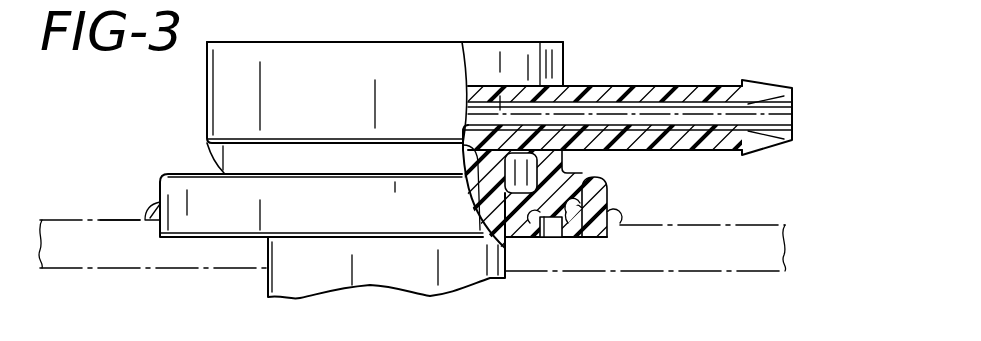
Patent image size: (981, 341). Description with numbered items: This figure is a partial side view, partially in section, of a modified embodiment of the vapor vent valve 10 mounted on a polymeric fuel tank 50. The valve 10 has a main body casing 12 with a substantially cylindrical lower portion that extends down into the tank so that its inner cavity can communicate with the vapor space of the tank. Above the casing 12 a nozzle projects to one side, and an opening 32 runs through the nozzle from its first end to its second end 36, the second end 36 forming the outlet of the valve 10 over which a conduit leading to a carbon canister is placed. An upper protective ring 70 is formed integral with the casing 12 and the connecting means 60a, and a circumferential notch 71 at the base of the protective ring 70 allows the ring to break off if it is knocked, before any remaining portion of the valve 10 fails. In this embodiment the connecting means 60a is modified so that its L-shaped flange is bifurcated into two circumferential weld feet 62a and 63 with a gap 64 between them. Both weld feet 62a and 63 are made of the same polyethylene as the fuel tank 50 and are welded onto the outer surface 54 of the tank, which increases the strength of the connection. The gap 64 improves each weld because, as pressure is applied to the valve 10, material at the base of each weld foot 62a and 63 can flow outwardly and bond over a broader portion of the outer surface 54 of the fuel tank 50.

The vapor vent valve 10 is at (596, 64).
The main body casing 12 is at (452, 270).
The opening 32 is at (693, 117).
The second end 36 is at (775, 93).
The fuel tank 50 is at (88, 255).
The outer surface 54 is at (83, 220).
The connecting means 60a is at (622, 199).
The weld foot 62a is at (557, 237).
The weld foot 63 is at (595, 237).
The gap 64 is at (582, 197).
The protective ring 70 is at (563, 45).
The circumferential notch 71 is at (220, 163).